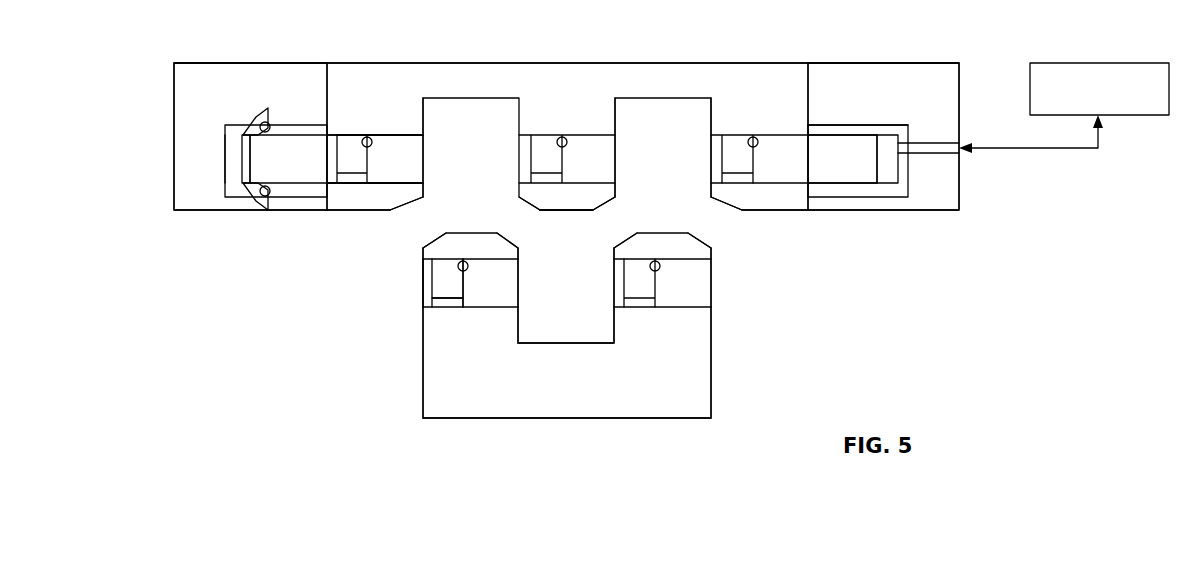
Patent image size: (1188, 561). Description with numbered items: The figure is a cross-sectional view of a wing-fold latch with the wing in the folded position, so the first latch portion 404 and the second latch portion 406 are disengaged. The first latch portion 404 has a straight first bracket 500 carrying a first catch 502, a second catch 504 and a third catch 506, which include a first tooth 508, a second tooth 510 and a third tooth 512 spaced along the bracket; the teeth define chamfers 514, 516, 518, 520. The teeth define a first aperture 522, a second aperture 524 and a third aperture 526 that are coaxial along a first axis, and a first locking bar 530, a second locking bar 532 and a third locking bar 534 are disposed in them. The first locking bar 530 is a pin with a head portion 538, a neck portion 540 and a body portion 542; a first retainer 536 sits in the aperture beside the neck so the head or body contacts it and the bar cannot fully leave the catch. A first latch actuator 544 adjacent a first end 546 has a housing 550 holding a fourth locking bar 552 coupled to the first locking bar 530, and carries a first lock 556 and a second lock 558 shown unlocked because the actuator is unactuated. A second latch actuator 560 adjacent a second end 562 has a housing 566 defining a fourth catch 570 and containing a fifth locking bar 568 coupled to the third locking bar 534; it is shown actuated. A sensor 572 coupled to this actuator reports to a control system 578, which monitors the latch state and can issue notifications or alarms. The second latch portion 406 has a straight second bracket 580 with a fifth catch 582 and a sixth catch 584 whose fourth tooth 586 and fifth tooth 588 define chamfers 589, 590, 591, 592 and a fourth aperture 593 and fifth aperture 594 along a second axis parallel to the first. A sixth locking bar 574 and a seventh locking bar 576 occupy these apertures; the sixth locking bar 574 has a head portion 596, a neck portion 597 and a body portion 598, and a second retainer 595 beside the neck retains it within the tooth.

The first latch portion 404 is at (801, 55).
The second latch portion 406 is at (390, 409).
The first bracket 500 is at (645, 68).
The first catch 502 is at (333, 225).
The second catch 504 is at (568, 220).
The third catch 506 is at (794, 224).
The first tooth 508 is at (375, 205).
The second tooth 510 is at (568, 203).
The third tooth 512 is at (760, 207).
The chamfer 514 is at (410, 203).
The chamfer 516 is at (536, 206).
The chamfer 518 is at (612, 200).
The chamfer 520 is at (730, 204).
The first aperture 522 is at (340, 143).
The second aperture 524 is at (537, 143).
The third aperture 526 is at (730, 142).
The first locking bar 530 is at (433, 174).
The second locking bar 532 is at (623, 172).
The third locking bar 534 is at (700, 160).
The first retainer 536 is at (370, 139).
The head portion 538 is at (331, 145).
The neck portion 540 is at (347, 160).
The body portion 542 is at (393, 165).
The first latch actuator 544 is at (212, 160).
The first end 546 is at (324, 90).
The housing 550 is at (223, 173).
The fourth locking bar 552 is at (307, 160).
The first lock 556 is at (250, 122).
The second lock 558 is at (248, 200).
The second latch actuator 560 is at (920, 203).
The second end 562 is at (810, 70).
The housing 566 is at (867, 130).
The fifth locking bar 568 is at (840, 165).
The fourth catch 570 is at (884, 163).
The sensor 572 is at (920, 145).
The sixth locking bar 574 is at (400, 287).
The seventh locking bar 576 is at (722, 278).
The control system 578 is at (1030, 66).
The second bracket 580 is at (680, 397).
The fifth catch 582 is at (398, 318).
The sixth catch 584 is at (727, 314).
The fourth tooth 586 is at (520, 326).
The fifth tooth 588 is at (614, 316).
The chamfer 589 is at (440, 237).
The chamfer 590 is at (512, 246).
The chamfer 591 is at (628, 236).
The chamfer 592 is at (703, 246).
The fourth aperture 593 is at (438, 300).
The fifth aperture 594 is at (638, 300).
The second retainer 595 is at (457, 265).
The head portion 596 is at (423, 297).
The neck portion 597 is at (443, 288).
The body portion 598 is at (492, 285).